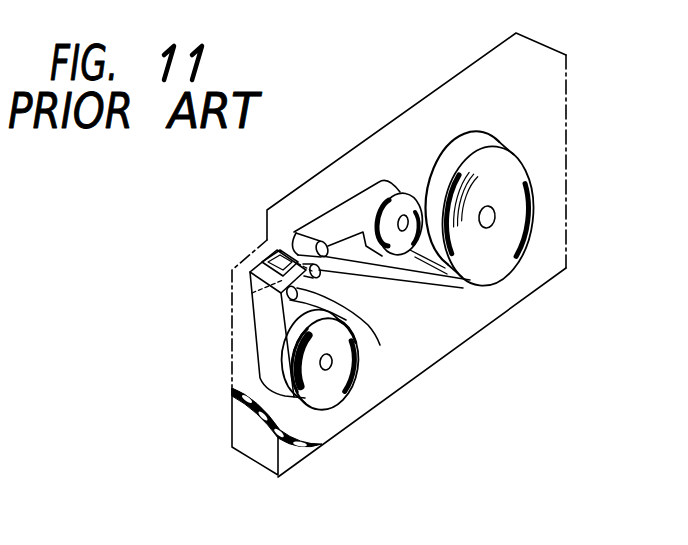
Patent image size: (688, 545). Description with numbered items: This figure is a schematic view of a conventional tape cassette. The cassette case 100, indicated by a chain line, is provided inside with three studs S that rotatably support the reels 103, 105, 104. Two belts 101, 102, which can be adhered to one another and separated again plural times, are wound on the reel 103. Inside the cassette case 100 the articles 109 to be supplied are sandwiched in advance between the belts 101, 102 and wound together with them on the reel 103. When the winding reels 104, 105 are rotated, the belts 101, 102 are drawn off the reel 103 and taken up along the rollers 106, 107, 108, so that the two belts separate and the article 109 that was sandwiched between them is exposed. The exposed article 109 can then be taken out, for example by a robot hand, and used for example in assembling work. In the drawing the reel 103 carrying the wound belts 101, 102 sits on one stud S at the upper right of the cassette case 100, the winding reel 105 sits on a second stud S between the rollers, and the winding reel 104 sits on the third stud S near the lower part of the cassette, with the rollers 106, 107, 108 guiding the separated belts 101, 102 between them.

The cassette case 100 is at (468, 66).
The belt 101 is at (331, 213).
The belt 102 is at (257, 318).
The reel 103 is at (533, 190).
The winding reel 104 is at (336, 397).
The winding reel 105 is at (401, 208).
The roller 106 is at (368, 328).
The roller 107 is at (318, 274).
The roller 108 is at (304, 235).
The article 109 is at (266, 248).
The stud S is at (404, 215).